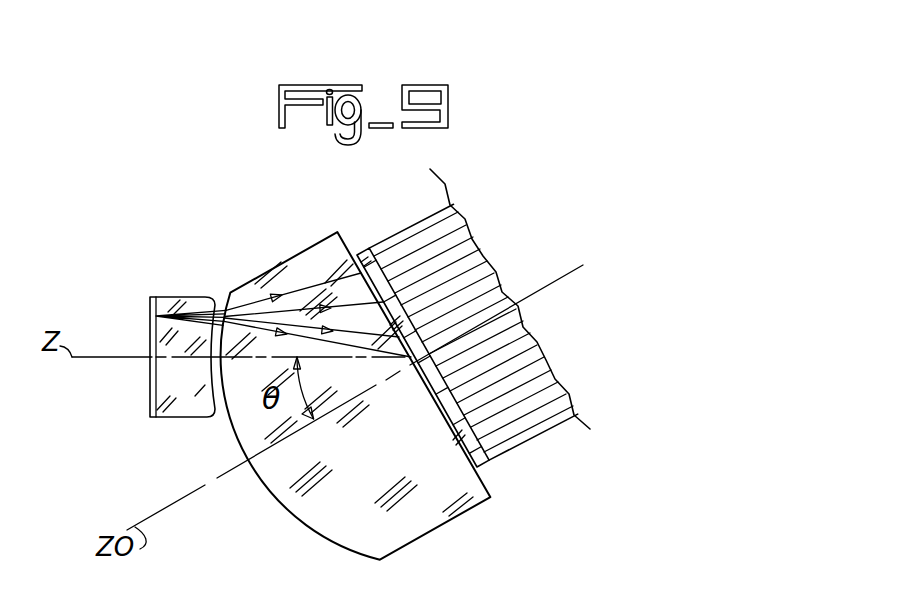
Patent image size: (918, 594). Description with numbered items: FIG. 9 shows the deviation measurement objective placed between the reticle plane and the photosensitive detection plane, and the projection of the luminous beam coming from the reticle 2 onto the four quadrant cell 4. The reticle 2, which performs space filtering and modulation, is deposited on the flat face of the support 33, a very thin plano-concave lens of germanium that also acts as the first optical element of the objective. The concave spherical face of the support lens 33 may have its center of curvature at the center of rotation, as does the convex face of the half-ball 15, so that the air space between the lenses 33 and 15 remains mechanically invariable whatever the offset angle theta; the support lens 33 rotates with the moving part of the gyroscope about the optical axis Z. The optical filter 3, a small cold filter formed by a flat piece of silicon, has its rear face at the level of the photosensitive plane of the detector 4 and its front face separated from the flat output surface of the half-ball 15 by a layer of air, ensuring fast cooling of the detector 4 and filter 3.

The space filtering and modulation reticle 2 is at (153, 315).
The optical filter 3 is at (362, 251).
The four quadrant cell 4 is at (517, 424).
The half-ball 15 is at (316, 533).
The support 33 is at (207, 417).